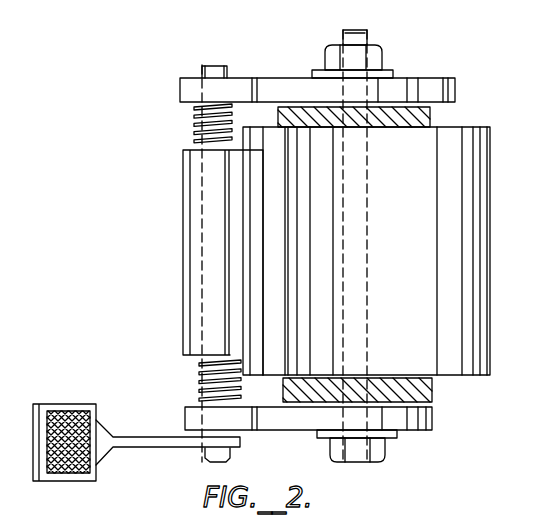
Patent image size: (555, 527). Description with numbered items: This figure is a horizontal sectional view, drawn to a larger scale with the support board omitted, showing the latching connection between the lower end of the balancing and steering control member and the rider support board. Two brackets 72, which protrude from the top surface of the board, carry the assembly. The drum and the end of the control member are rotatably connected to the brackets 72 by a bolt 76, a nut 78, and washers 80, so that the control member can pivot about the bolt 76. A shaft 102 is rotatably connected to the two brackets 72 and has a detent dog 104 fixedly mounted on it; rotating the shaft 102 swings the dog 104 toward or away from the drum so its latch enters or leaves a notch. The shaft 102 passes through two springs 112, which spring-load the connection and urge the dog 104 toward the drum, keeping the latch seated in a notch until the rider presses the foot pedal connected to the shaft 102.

The brackets 72 is at (440, 80).
The bolt 76 is at (382, 454).
The nut 78 is at (379, 56).
The washers 80 is at (318, 71).
The shaft 102 is at (207, 59).
The detent dog 104 is at (174, 207).
The springs 112 is at (184, 121).